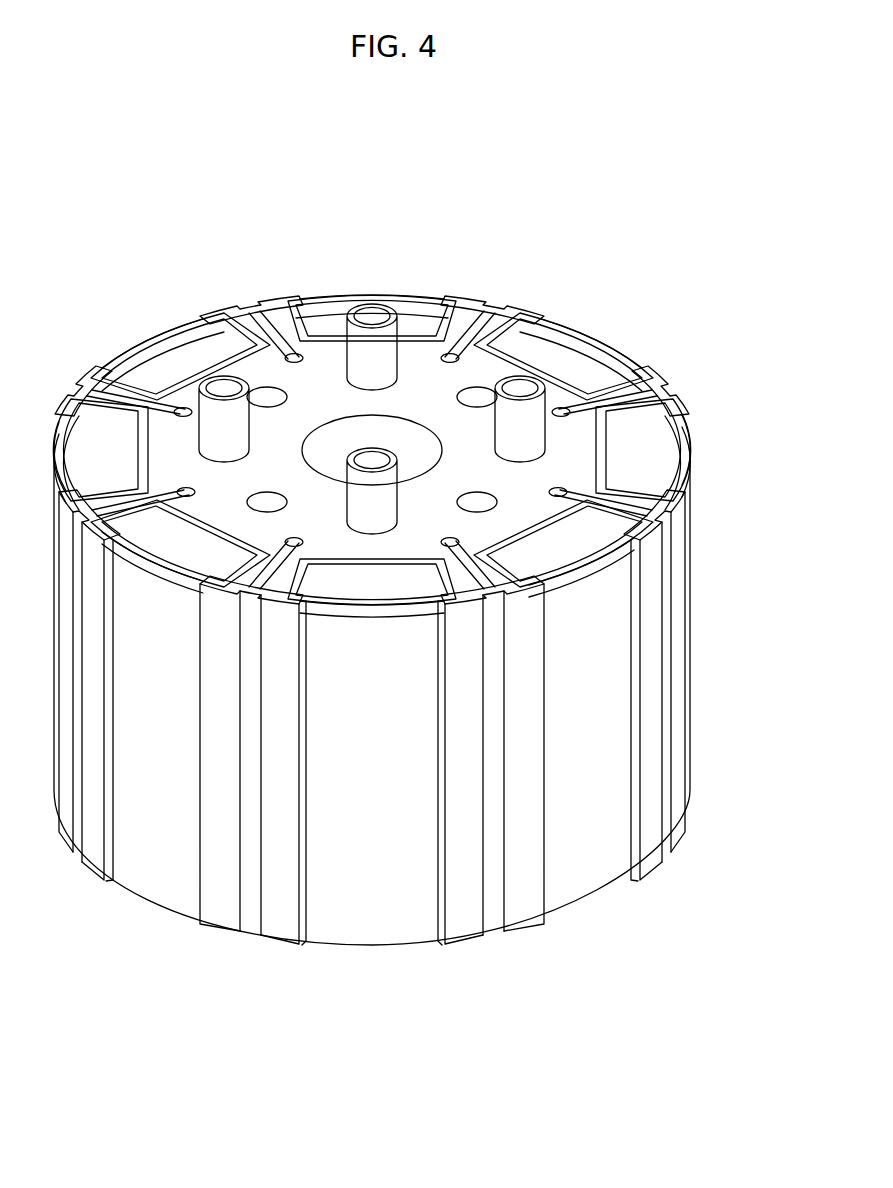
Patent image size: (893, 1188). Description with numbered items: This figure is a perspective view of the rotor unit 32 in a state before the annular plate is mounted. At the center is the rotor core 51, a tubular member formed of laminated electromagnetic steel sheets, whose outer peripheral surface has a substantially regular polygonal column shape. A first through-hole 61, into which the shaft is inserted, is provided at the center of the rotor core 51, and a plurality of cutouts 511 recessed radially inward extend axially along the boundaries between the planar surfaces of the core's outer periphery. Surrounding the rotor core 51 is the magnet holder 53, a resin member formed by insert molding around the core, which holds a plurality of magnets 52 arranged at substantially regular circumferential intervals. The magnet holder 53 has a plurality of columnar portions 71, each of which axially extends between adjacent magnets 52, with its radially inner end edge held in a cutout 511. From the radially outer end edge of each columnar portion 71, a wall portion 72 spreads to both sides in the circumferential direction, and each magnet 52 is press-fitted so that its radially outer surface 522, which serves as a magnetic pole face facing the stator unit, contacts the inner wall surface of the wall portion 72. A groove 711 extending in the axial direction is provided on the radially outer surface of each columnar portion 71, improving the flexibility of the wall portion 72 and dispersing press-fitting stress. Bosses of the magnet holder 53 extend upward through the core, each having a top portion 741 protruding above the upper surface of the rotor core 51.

The rotor unit 32 is at (271, 203).
The rotor core 51 is at (342, 368).
The cutout 511 is at (179, 407).
The magnet 52 is at (520, 337).
The radially outer surface of magnet 522 is at (378, 905).
The magnet holder 53 is at (683, 858).
The first through-hole 61 is at (325, 440).
The columnar portion 71 is at (608, 397).
The groove 711 is at (251, 874).
The wall portion 72 is at (642, 362).
The top portion of boss 741 is at (372, 310).